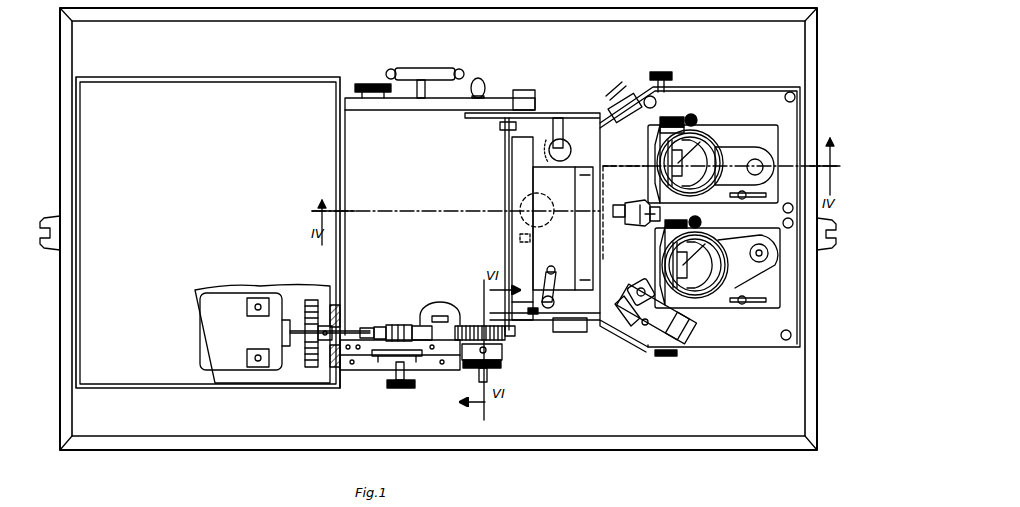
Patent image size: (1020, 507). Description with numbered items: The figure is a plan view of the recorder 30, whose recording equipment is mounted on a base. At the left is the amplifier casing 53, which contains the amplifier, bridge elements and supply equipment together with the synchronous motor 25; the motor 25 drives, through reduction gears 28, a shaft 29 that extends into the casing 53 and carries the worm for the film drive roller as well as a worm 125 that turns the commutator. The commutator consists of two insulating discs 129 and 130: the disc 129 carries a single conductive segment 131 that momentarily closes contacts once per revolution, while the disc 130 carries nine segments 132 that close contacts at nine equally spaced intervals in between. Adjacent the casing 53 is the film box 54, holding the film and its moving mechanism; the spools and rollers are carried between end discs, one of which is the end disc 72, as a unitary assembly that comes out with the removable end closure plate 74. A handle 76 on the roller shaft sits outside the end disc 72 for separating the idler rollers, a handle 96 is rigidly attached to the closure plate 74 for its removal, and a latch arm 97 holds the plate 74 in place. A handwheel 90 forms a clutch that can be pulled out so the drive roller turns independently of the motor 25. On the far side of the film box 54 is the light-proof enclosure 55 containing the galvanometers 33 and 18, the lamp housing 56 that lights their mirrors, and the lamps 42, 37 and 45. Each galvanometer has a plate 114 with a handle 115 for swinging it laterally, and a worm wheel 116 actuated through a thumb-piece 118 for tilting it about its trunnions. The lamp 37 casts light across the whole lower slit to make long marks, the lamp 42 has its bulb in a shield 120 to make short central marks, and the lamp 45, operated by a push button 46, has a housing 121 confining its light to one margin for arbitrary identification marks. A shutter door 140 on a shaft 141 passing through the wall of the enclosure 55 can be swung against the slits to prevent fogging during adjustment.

The housing casing 30 is at (398, 30).
The amplifier casing 53 is at (228, 85).
The film box 54 is at (360, 140).
The light-proof enclosure 55 is at (712, 88).
The end closure plate 74 is at (445, 110).
The handle 96 is at (420, 70).
The latch arm 97 is at (492, 96).
The shaft 141 is at (504, 136).
The shutter door 140 is at (520, 174).
The lamp housing 56 is at (572, 168).
The push button 46 is at (545, 326).
The galvanometer 33 is at (704, 140).
The worm wheel 116 is at (672, 117).
The thumb-piece 118 is at (692, 113).
The plate 114 is at (744, 152).
The handle 115 is at (757, 252).
The galvanometer 18 is at (714, 300).
The lamp 42 is at (628, 204).
The shield 120 is at (645, 230).
The lamp 37 is at (642, 281).
The lamp 45 is at (622, 304).
The housing 121 is at (625, 324).
The synchronous motor 25 is at (237, 360).
The reduction gears 28 is at (308, 312).
The shaft 29 is at (438, 362).
The disc 129 is at (372, 327).
The worm 125 is at (392, 325).
The conductive segment 131 is at (414, 326).
The disc 130 is at (374, 356).
The segments 132 is at (400, 388).
The end disc 72 is at (434, 310).
The handle 76 is at (455, 322).
The handwheel 90 is at (500, 360).